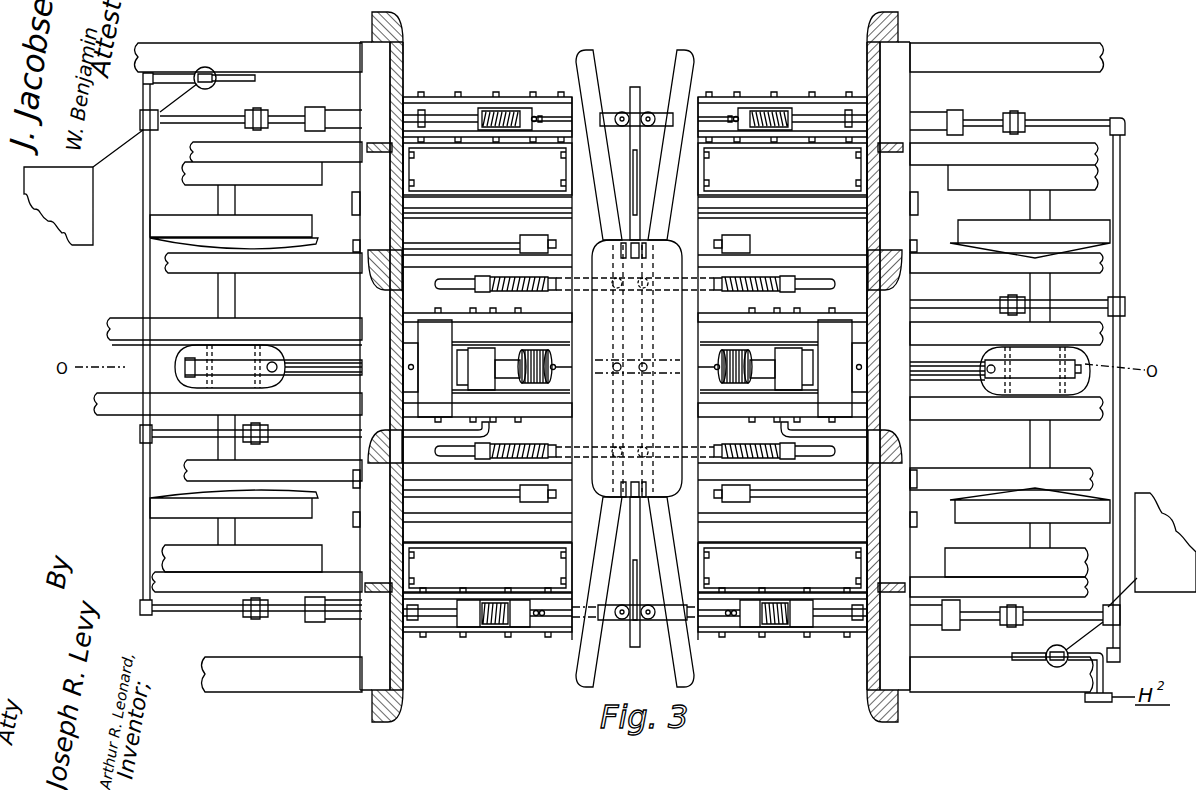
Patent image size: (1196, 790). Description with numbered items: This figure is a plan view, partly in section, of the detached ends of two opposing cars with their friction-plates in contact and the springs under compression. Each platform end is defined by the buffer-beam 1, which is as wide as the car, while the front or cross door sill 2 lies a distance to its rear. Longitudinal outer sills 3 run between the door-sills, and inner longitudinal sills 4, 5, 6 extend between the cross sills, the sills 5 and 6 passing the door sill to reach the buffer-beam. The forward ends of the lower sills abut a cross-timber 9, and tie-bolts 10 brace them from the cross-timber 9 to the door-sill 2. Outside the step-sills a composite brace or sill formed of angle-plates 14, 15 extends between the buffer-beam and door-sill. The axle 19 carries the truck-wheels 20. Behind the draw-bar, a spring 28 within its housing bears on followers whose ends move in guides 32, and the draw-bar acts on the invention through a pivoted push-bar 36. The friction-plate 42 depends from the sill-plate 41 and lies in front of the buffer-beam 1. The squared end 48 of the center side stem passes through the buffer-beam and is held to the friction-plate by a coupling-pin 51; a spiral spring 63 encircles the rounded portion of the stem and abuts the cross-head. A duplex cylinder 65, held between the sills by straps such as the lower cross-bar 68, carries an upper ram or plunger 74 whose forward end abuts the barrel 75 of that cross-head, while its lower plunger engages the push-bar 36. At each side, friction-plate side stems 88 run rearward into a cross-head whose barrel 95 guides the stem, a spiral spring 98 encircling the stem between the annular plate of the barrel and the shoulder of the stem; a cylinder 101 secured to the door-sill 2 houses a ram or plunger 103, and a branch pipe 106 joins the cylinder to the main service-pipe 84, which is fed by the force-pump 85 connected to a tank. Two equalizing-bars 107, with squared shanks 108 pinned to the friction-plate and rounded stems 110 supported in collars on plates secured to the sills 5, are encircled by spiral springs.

The buffer-beam 1 is at (635, 368).
The front or cross door sill 2 is at (635, 367).
The longitudinal outer sill 3 is at (619, 367).
The inner longitudinal sill 4 is at (625, 370).
The inner longitudinal sill 5 is at (634, 371).
The central inner longitudinal sill 6 is at (598, 369).
The cross-timber 9 is at (733, 503).
The tie-bolt 10 is at (800, 500).
The angle-plate 14 is at (786, 638).
The angle-plate 15 is at (775, 592).
The axle 19 is at (1050, 294).
The truck-wheel 20 is at (630, 369).
The spring 28 is at (1033, 370).
The guide 32 is at (1030, 390).
The pivoted push-bar 36 is at (943, 360).
The sill-plate 41 is at (634, 434).
The friction-plate 42 is at (630, 575).
The squared end of side stem 48 is at (712, 346).
The coupling-pin 51 is at (648, 364).
The spiral spring 63 is at (736, 385).
The duplex cylinder 65 is at (808, 390).
The strap or cross-bar 68 is at (635, 368).
The ram or plunger 74 is at (635, 369).
The barrel of cross-head 75 is at (635, 370).
The main service-pipe 84 is at (1112, 536).
The force-pump 85 is at (1058, 660).
The friction-plate side stem 88 is at (650, 645).
The barrel of cross-head 95 is at (635, 613).
The spiral spring 98 is at (755, 628).
The cylinder 101 is at (930, 118).
The ram or plunger 103 is at (822, 618).
The branch pipe 106 is at (1044, 618).
The equalizing-bar 107 is at (822, 456).
The shank of equalizing-bar 108 is at (702, 456).
The stem of equalizing-bar 110 is at (464, 242).